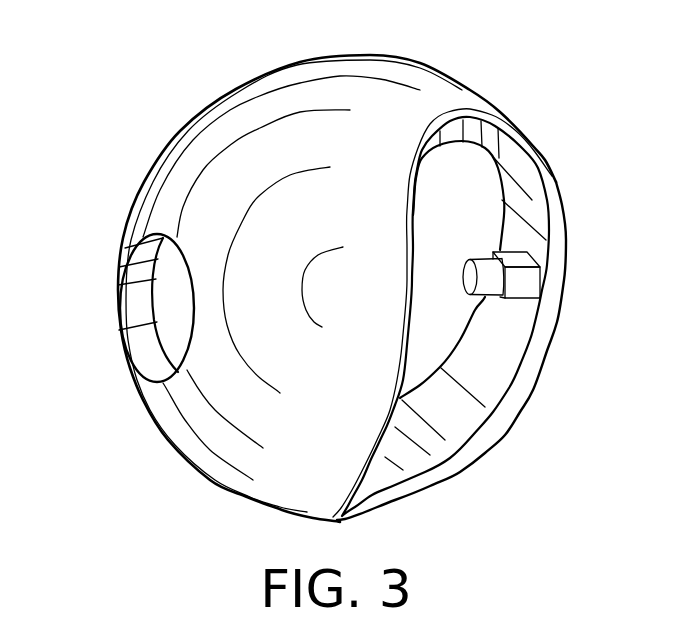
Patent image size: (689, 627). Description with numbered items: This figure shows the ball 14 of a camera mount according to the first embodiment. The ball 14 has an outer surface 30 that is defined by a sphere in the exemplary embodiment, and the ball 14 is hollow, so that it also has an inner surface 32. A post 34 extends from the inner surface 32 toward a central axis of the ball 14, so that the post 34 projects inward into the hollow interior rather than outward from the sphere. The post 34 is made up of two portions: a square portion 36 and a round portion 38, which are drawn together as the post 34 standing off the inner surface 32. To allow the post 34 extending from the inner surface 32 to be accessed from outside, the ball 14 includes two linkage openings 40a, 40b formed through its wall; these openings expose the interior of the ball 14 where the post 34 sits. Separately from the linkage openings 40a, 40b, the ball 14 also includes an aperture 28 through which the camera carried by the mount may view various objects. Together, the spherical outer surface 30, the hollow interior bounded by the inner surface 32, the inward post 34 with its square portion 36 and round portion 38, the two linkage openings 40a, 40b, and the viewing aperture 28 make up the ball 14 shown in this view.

The ball 14 is at (249, 60).
The aperture 28 is at (138, 292).
The outer surface 30 is at (205, 150).
The inner surface 32 is at (483, 373).
The post 34 is at (523, 253).
The square portion 36 is at (533, 285).
The round portion 38 is at (486, 254).
The linkage opening 40a is at (477, 161).
The linkage opening 40b is at (453, 155).